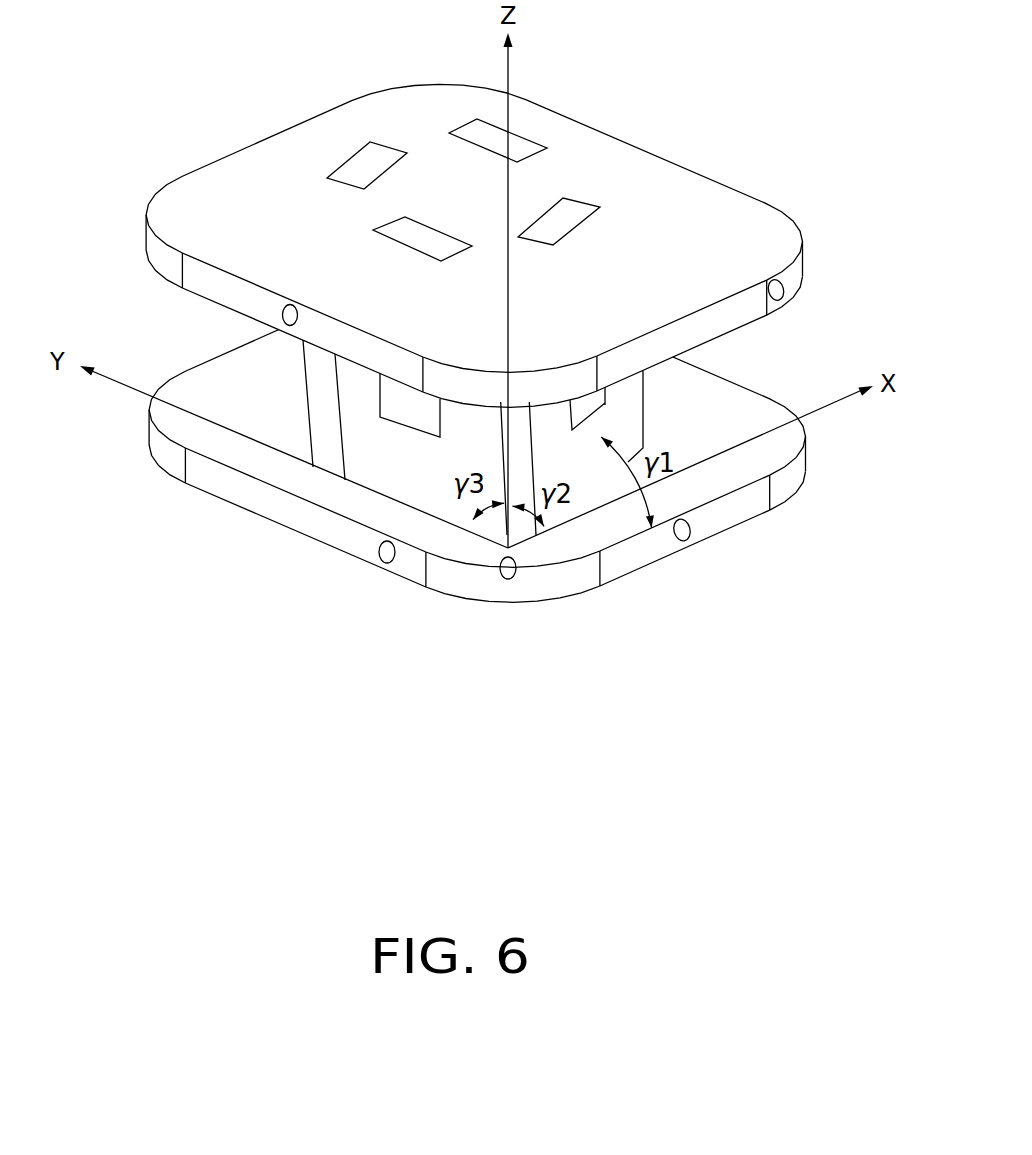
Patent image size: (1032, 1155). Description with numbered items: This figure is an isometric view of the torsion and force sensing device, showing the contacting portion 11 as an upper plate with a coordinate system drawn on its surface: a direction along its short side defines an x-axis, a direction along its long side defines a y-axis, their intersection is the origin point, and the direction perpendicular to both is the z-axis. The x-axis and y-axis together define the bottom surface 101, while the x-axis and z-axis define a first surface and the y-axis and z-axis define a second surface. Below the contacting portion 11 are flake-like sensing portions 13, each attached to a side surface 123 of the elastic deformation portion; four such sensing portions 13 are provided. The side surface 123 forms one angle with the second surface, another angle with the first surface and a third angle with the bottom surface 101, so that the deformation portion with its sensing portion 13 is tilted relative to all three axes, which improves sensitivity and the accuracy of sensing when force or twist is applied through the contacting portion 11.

The contacting portion 11 is at (663, 177).
The sensing portion 13 is at (402, 402).
The bottom surface 101 is at (778, 453).
The side surface 123 is at (430, 490).